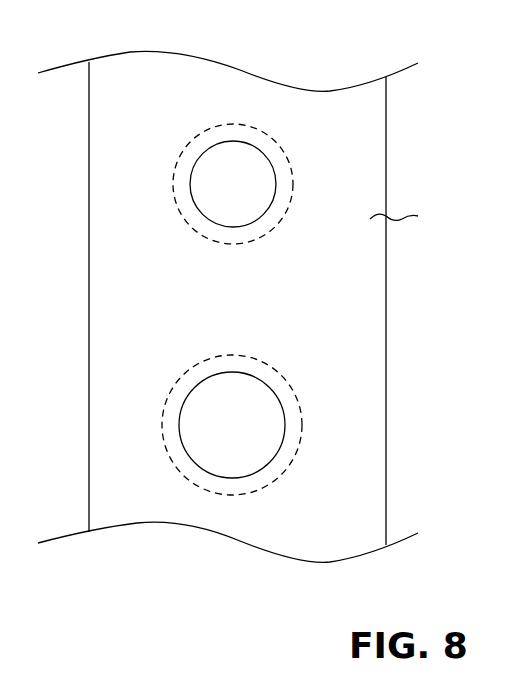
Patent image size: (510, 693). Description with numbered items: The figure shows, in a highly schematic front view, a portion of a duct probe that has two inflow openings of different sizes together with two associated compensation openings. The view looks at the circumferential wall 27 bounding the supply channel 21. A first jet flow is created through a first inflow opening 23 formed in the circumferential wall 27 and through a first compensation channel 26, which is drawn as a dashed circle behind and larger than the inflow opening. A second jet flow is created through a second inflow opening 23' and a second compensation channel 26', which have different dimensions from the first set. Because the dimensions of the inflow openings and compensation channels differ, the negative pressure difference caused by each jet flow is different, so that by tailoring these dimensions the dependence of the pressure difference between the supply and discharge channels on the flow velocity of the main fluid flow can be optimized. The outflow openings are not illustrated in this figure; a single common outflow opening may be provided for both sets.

The supply channel 21 is at (393, 172).
The circumferential wall 27 is at (413, 220).
The first compensation channel 26 is at (211, 173).
The first inflow opening 23 is at (202, 195).
The second compensation channel 26' is at (215, 416).
The second inflow opening 23' is at (206, 438).